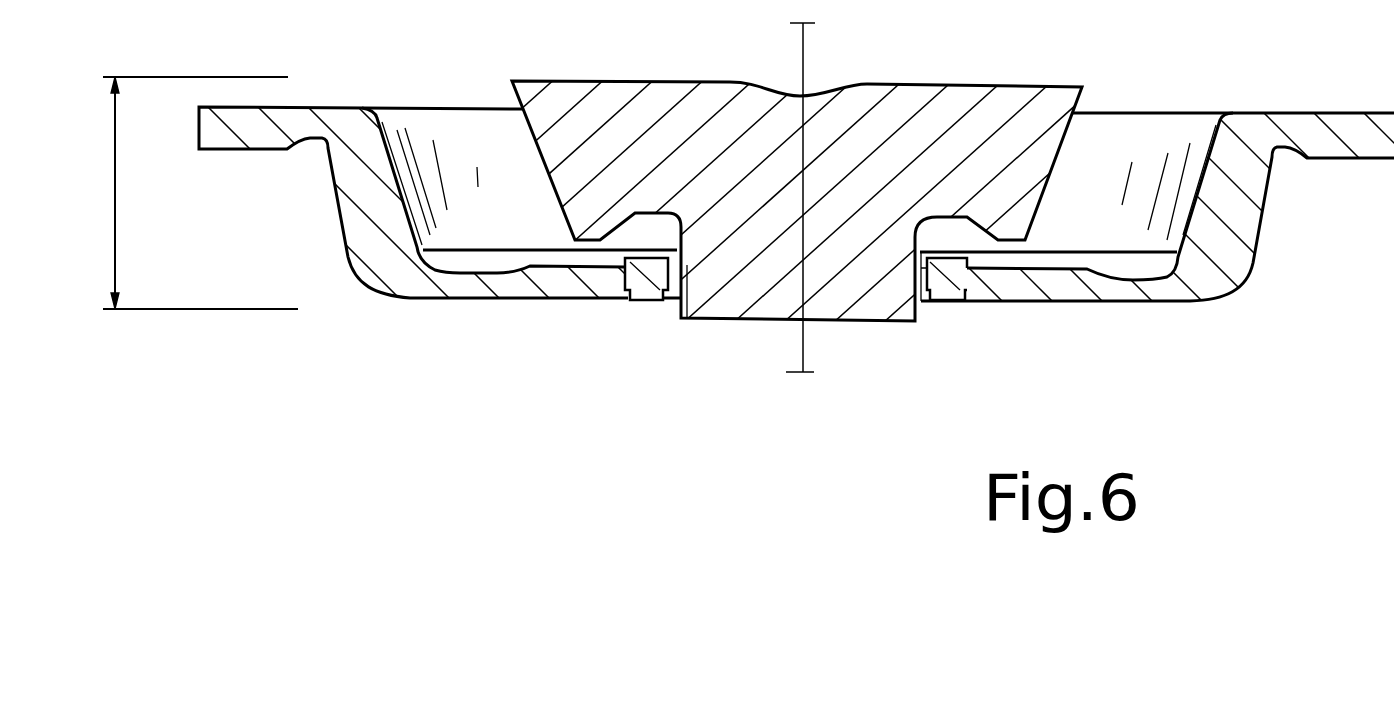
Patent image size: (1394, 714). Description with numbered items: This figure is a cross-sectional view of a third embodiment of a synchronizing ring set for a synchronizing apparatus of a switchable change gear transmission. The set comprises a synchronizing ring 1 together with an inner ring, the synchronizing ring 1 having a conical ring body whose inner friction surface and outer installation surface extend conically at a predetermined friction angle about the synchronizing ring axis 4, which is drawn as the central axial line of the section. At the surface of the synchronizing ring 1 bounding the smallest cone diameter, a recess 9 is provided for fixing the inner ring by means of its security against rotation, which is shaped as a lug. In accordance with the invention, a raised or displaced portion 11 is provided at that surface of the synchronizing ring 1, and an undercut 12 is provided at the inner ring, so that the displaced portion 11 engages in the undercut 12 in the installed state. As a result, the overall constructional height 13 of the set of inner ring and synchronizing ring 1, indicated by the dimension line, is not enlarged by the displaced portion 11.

The synchronizing ring 1 is at (1260, 143).
The synchronizing ring axis 4 is at (806, 58).
The recess 9 is at (820, 290).
The displaced portion 11 is at (653, 267).
The undercut 12 is at (638, 227).
The overall constructional height 13 is at (111, 190).